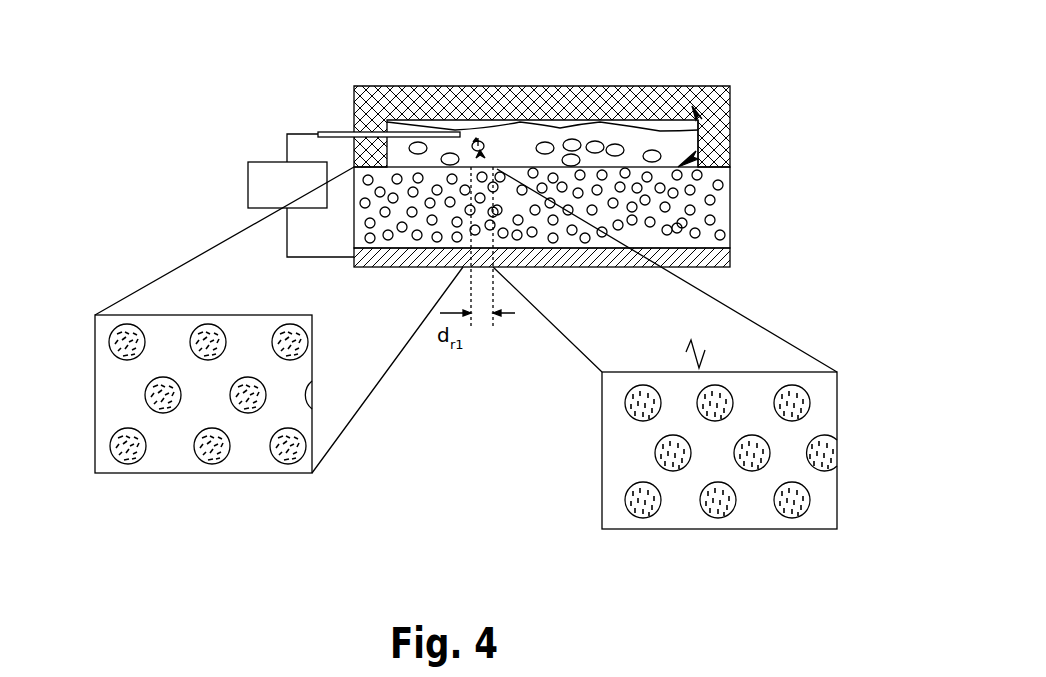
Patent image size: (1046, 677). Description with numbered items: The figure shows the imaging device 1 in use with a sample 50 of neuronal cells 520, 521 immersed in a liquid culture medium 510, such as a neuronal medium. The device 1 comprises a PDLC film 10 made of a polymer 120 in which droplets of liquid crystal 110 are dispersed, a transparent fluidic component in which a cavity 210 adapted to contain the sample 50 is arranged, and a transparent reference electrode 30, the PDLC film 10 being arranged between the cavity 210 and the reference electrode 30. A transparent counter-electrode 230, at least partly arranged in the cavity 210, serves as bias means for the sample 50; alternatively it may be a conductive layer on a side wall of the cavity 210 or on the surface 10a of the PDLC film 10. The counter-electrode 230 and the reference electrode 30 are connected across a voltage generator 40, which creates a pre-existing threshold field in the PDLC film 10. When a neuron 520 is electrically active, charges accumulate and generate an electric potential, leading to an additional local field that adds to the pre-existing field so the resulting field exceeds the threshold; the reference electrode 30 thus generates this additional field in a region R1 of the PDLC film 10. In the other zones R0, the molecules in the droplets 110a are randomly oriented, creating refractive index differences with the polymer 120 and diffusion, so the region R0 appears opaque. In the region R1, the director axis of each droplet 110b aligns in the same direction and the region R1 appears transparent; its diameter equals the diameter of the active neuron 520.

The imaging device 1 is at (212, 37).
The PDLC film 10 is at (601, 206).
The surface of the PDLC film 10a is at (730, 146).
The reference electrode 30 is at (730, 257).
The voltage generator 40 is at (248, 180).
The sample 50 is at (542, 83).
The droplets of liquid crystal 110 is at (720, 187).
The droplets in the region R0 110a is at (110, 340).
The droplets in the region R1 110b is at (812, 400).
The polymer 120 is at (716, 211).
The cavity 210 is at (700, 116).
The counter-electrode 230 is at (333, 130).
The liquid culture medium 510 is at (610, 121).
The neuronal cell 520 is at (480, 140).
The neuronal cell 521 is at (537, 98).
The region R0 is at (398, 268).
The region R1 is at (497, 240).